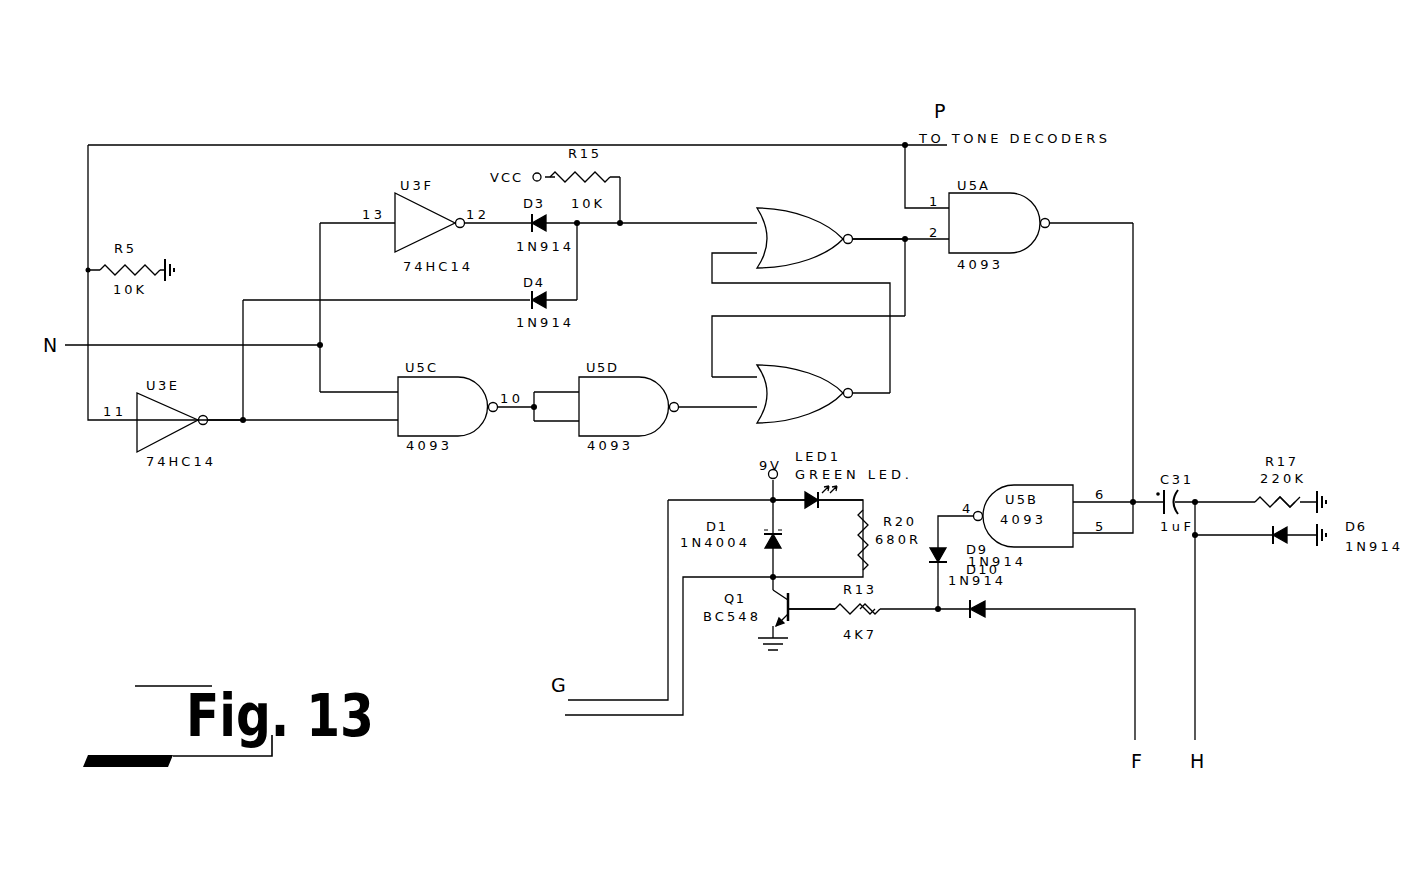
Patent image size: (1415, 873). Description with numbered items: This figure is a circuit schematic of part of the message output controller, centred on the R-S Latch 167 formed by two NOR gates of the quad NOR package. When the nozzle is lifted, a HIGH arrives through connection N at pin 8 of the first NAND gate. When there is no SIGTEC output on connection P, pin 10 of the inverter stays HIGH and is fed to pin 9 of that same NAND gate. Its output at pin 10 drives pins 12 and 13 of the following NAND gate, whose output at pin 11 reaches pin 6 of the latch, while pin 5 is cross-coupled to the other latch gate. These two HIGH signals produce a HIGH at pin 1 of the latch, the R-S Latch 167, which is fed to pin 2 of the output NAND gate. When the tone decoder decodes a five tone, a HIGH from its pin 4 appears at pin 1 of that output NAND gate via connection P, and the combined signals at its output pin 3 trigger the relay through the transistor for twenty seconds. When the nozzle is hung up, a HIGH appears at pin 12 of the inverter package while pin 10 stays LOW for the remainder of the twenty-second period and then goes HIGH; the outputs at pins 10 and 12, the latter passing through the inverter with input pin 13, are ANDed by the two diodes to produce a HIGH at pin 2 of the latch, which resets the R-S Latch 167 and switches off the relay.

The R-S Latch 167 is at (916, 241).
The pin 1 is at (879, 231).
The pin 2 is at (728, 215).
The pin 3 is at (1091, 215).
The pin 4 is at (871, 386).
The pin 5 is at (734, 371).
The pin 6 is at (736, 401).
The pin 8 is at (359, 384).
The pin 9 is at (320, 414).
The pin 10 is at (225, 412).
The pin 11 is at (696, 399).
The pin 12 is at (556, 384).
The pin 13 is at (556, 414).